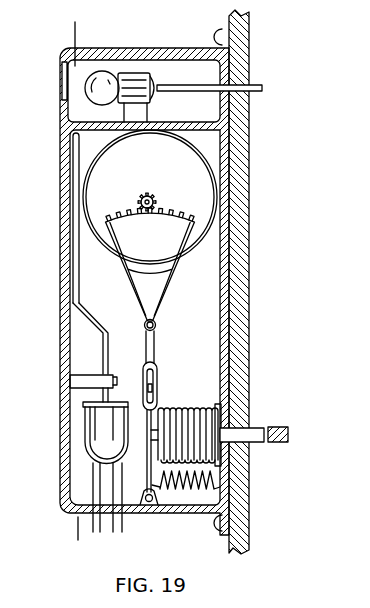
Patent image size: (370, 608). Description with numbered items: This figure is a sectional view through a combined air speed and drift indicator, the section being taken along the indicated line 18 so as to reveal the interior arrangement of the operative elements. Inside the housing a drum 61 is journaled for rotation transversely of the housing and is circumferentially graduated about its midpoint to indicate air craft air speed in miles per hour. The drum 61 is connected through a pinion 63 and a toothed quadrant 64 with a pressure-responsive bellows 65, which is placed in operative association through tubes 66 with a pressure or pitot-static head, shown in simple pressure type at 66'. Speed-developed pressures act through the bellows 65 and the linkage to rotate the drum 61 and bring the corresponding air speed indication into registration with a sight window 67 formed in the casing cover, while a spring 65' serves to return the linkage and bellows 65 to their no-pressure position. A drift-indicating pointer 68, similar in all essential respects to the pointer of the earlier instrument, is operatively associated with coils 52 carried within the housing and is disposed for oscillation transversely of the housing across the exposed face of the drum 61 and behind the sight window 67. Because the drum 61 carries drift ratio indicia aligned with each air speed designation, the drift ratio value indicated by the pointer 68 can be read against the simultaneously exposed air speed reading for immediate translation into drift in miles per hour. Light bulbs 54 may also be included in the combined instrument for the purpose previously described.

The section line 18 is at (70, 28).
The coils 52 is at (105, 467).
The light bulbs 54 is at (97, 97).
The drum 61 is at (184, 139).
The pinion 63 is at (141, 202).
The toothed quadrant 64 is at (178, 223).
The pressure-responsive bellows 65 is at (186, 425).
The spring 65' is at (186, 509).
The tubes 66 is at (247, 449).
The pressure head 66' is at (272, 419).
The sight window 67 is at (72, 200).
The drift-indicating pointer 68 is at (80, 283).